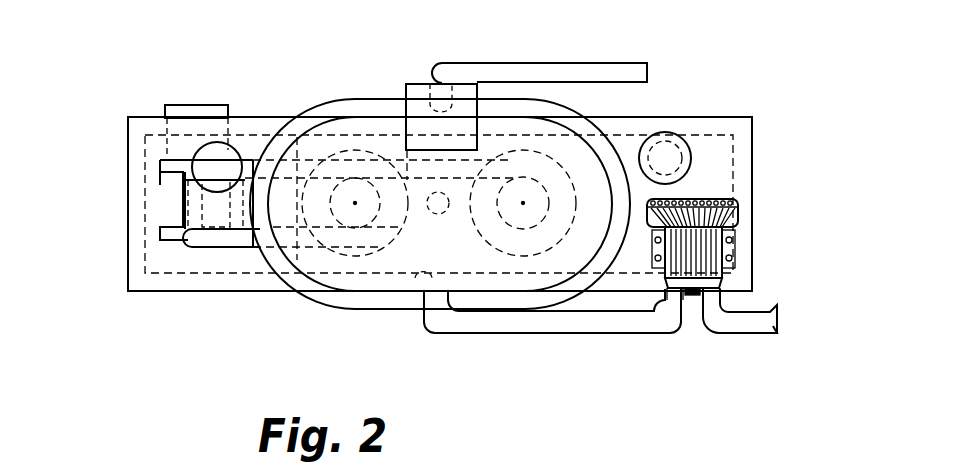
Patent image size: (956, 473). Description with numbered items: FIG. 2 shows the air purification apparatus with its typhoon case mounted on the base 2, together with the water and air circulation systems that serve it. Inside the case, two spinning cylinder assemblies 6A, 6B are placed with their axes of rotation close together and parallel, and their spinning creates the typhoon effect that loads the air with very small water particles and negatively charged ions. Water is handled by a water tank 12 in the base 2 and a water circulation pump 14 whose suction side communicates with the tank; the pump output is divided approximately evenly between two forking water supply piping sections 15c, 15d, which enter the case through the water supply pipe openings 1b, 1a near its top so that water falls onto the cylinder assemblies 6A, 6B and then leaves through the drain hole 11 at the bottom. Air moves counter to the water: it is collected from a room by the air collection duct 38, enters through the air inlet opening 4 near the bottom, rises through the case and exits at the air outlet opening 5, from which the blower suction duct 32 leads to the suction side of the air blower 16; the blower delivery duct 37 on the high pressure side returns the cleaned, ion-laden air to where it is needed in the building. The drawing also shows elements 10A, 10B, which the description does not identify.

The base 2 is at (125, 231).
The water tank 12 is at (718, 171).
The air inlet opening 4 is at (403, 104).
The water supply pipe opening 1a is at (285, 140).
The water supply pipe opening 1b is at (278, 277).
The spinning cylinder assembly 6A is at (330, 152).
The spinning cylinder assembly 6B is at (535, 152).
The drain hole 11 is at (428, 211).
The air outlet opening 5 is at (423, 278).
The air collection duct 38 is at (520, 70).
The second bearing 10B is at (682, 141).
The water circulation pump 14 is at (151, 108).
The water supply piping section 15d is at (215, 167).
The first bearing 10A is at (253, 160).
The water supply piping section 15c is at (228, 242).
The air blower 16 is at (737, 245).
The blower suction duct 32 is at (556, 334).
The blower delivery duct 37 is at (748, 323).